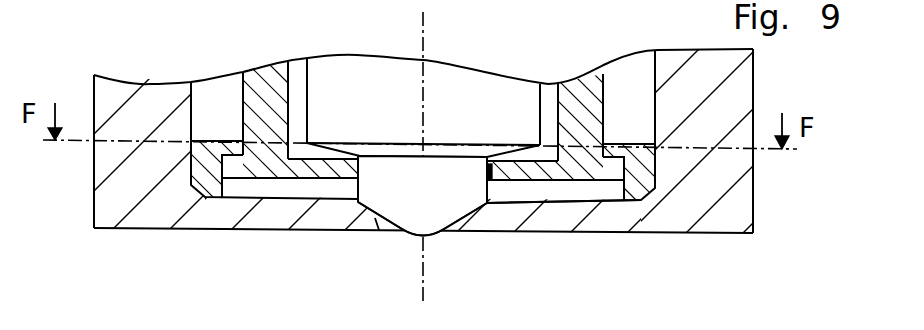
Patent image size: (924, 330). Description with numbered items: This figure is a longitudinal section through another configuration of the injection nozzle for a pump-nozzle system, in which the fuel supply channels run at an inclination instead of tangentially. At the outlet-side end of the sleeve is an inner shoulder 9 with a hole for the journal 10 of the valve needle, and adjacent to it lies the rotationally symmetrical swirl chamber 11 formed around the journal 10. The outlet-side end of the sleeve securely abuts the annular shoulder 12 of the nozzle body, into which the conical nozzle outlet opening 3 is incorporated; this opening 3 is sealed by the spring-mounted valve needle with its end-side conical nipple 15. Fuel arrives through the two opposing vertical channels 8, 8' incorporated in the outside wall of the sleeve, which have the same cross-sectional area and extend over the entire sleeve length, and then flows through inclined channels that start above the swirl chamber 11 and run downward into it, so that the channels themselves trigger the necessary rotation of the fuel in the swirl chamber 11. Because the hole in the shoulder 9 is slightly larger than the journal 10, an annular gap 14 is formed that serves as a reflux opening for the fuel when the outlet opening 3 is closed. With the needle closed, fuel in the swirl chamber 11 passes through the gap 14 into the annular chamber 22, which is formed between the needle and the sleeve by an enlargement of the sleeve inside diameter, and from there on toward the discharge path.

The nozzle outlet opening 3 is at (466, 220).
The channel 8 is at (677, 160).
The channel 8' is at (415, 160).
The inner shoulder 9 is at (310, 168).
The journal 10 is at (408, 180).
The swirl chamber 11 is at (253, 188).
The annular shoulder 12 is at (490, 182).
The annular gap 14 is at (540, 202).
The conical nipple 15 is at (372, 212).
The annular chamber 22 is at (293, 93).